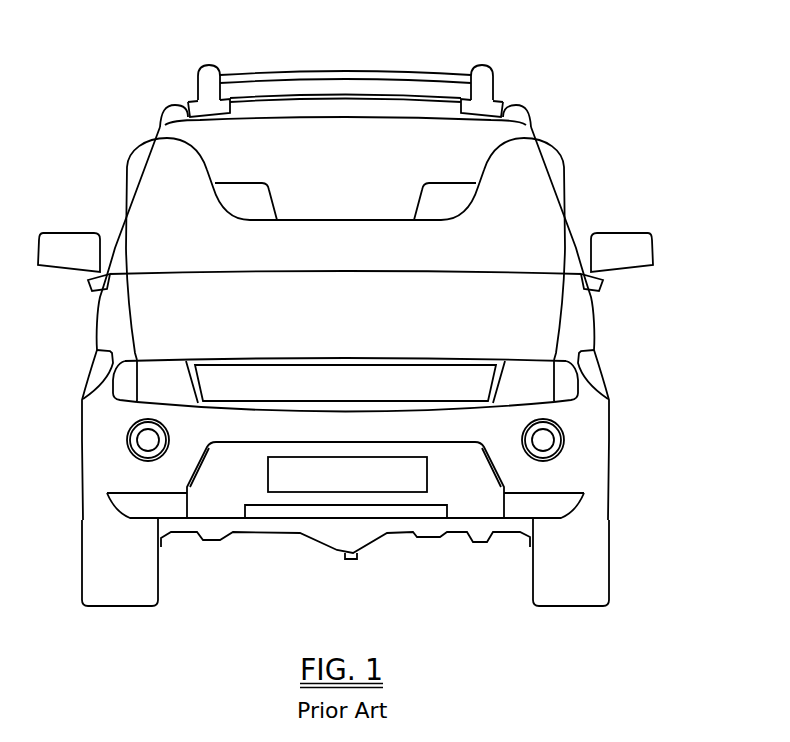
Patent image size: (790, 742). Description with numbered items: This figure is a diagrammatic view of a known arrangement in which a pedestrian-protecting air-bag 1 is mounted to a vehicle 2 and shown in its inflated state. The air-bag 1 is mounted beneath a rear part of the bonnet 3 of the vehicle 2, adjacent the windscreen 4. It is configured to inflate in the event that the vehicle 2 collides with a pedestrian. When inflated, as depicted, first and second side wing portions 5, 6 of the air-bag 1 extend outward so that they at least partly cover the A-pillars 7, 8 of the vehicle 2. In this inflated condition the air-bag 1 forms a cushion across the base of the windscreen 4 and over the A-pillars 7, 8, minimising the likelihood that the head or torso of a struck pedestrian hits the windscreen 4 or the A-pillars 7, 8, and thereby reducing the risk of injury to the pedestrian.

The pedestrian-protecting air-bag 1 is at (525, 233).
The vehicle 2 is at (610, 414).
The bonnet 3 is at (530, 322).
The windscreen 4 is at (323, 148).
The first side wing portion 5 is at (150, 185).
The second side wing portion 6 is at (533, 185).
The A-pillar 7 is at (157, 128).
The A-pillar 8 is at (533, 127).